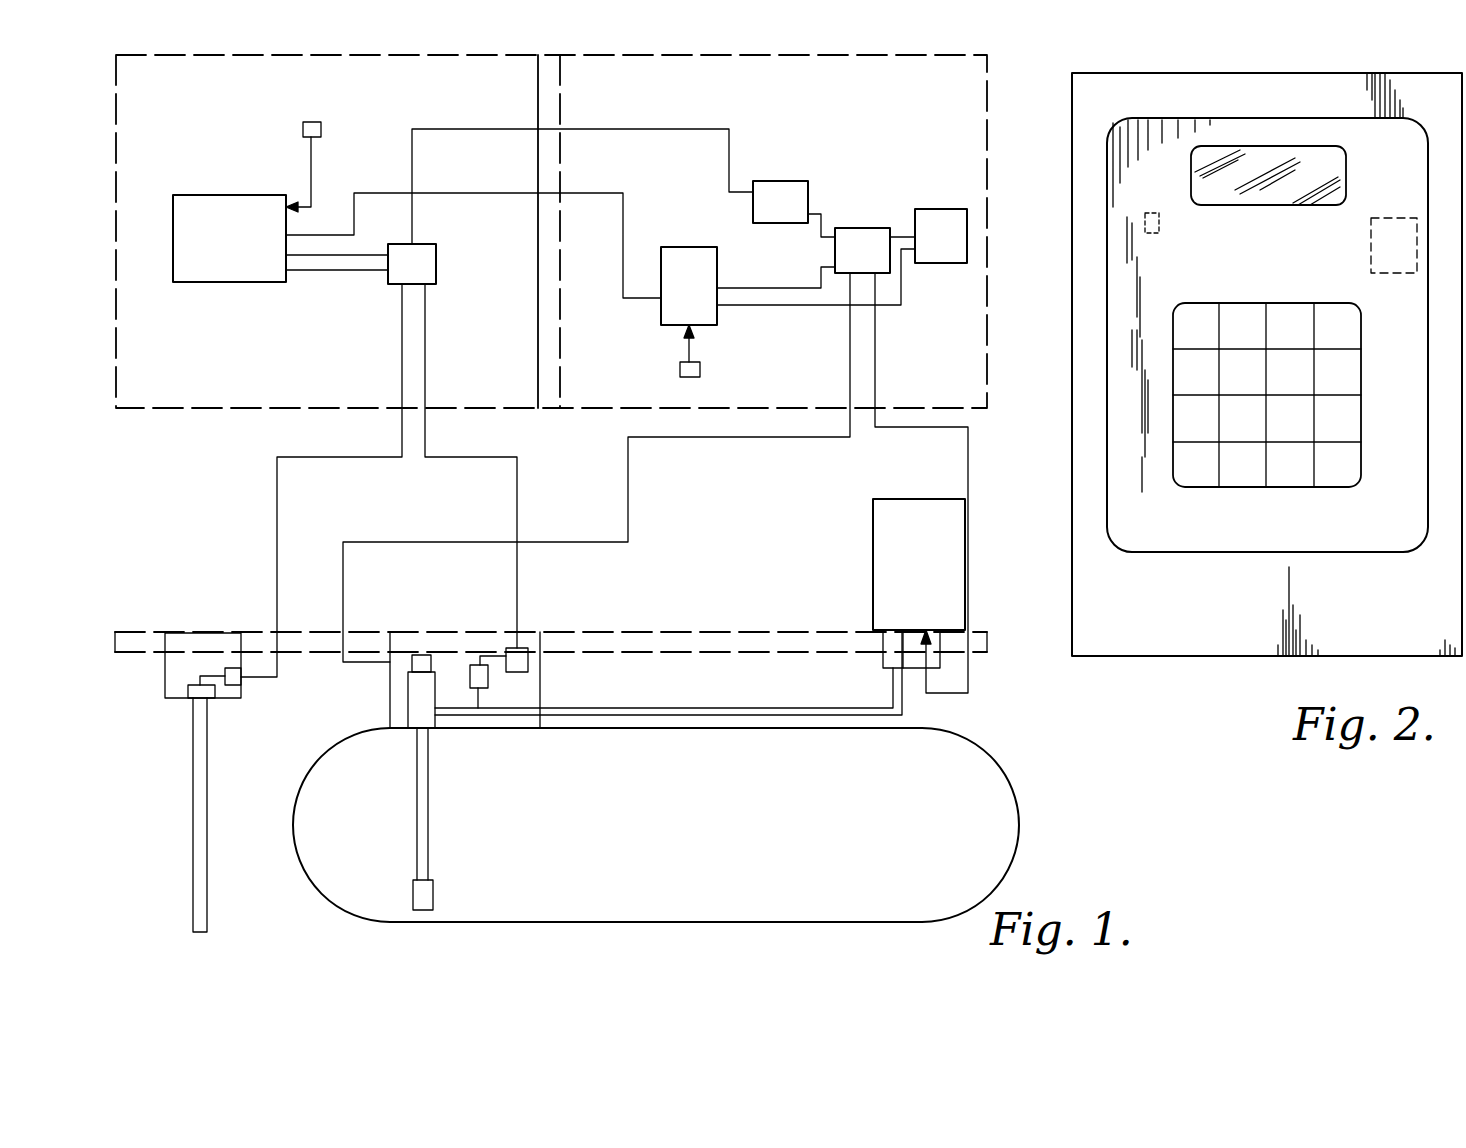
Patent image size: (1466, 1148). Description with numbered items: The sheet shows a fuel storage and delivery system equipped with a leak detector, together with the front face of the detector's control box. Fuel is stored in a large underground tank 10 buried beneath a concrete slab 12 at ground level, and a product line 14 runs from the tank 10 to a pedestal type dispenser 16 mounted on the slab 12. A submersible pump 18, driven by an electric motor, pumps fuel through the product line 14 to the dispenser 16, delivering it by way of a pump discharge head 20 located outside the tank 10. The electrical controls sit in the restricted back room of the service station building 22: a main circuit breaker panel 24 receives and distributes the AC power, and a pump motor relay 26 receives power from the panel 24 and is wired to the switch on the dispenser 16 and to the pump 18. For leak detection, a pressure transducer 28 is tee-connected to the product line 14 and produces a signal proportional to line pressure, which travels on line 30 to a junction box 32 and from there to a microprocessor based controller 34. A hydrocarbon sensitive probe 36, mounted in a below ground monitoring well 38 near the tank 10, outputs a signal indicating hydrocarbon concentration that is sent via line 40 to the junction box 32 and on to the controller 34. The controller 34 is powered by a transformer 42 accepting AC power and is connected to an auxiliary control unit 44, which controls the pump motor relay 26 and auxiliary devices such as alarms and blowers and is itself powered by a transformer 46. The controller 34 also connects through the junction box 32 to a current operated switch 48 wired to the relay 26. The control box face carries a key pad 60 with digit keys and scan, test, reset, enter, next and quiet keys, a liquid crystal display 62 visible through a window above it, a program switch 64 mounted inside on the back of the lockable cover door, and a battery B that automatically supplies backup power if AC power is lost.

In FIG. 1, the underground tank 10 is at (996, 790).
In FIG. 1, the concrete slab 12 is at (717, 640).
In FIG. 1, the product line 14 is at (735, 708).
In FIG. 1, the dispenser 16 is at (883, 522).
In FIG. 1, the submersible pump 18 is at (433, 888).
In FIG. 1, the pump discharge head 20 is at (408, 697).
In FIG. 1, the service station building 22 is at (975, 112).
In FIG. 1, the main circuit breaker panel 24 is at (957, 263).
In FIG. 1, the pump motor relay 26 is at (855, 232).
In FIG. 1, the pressure transducer 28 is at (472, 665).
In FIG. 1, the line 30 is at (517, 460).
In FIG. 1, the junction box 32 is at (436, 268).
In FIG. 1, the microprocessor based controller 34 is at (245, 268).
In FIG. 2, the microprocessor based controller 34 is at (1428, 637).
In FIG. 1, the hydrocarbon sensitive probe 36 is at (207, 783).
In FIG. 1, the monitoring well 38 is at (212, 640).
In FIG. 1, the line 40 is at (277, 480).
In FIG. 1, the transformer 42 is at (321, 126).
In FIG. 1, the auxiliary control unit 44 is at (708, 312).
In FIG. 1, the transformer 46 is at (700, 370).
In FIG. 1, the current operated switch 48 is at (790, 181).
In FIG. 2, the key pad 60 is at (1324, 292).
In FIG. 2, the liquid crystal display 62 is at (1286, 190).
In FIG. 2, the program switch 64 is at (1160, 225).
In FIG. 2, the battery B is at (1393, 245).